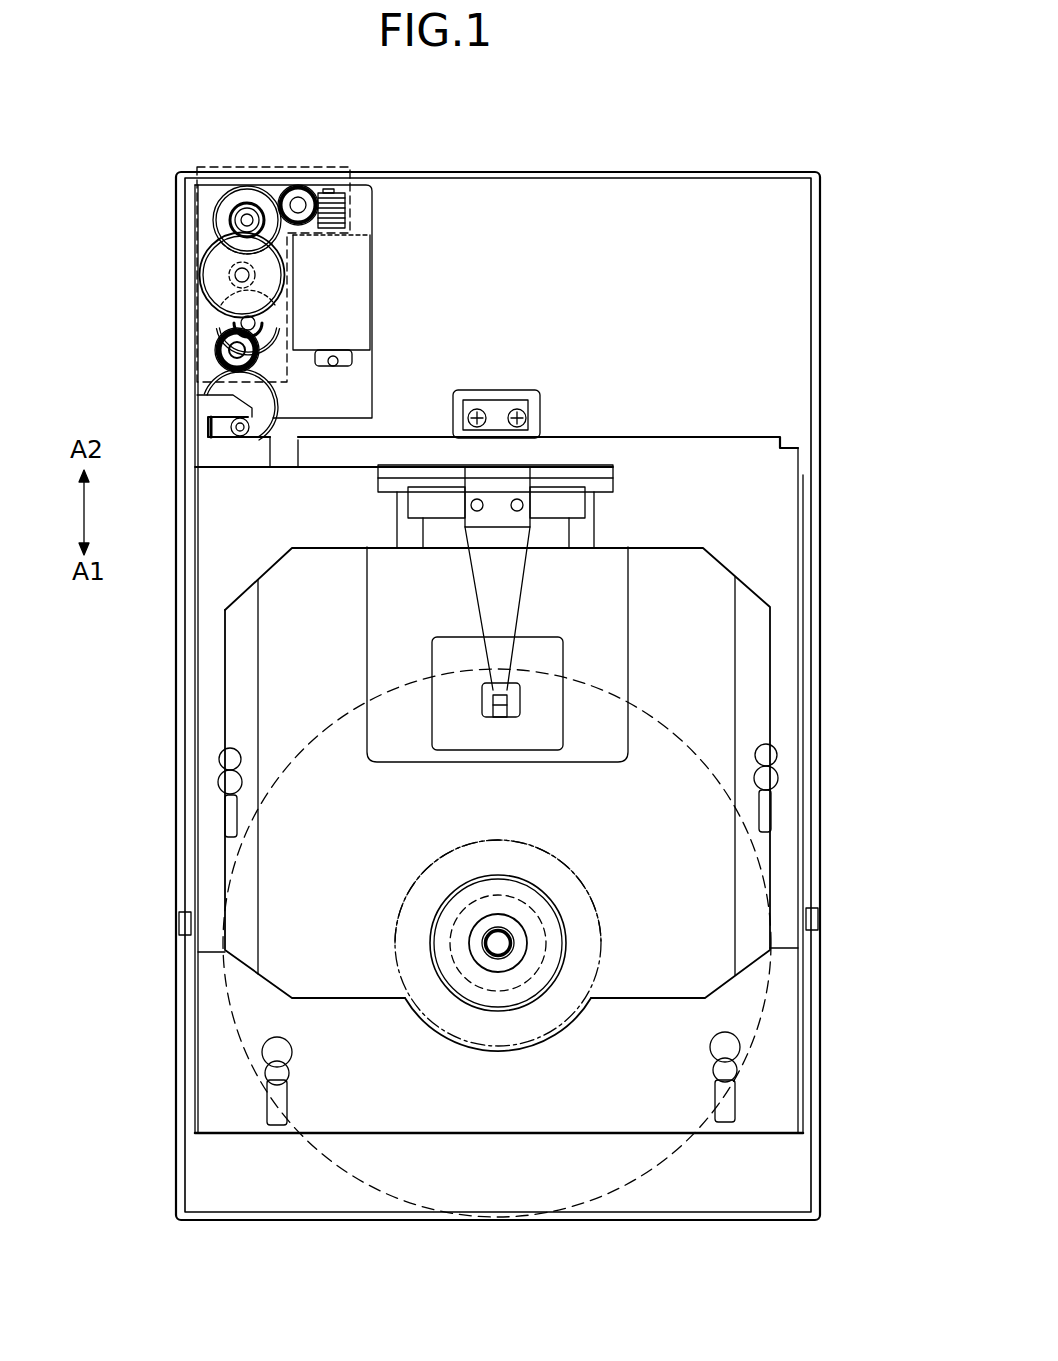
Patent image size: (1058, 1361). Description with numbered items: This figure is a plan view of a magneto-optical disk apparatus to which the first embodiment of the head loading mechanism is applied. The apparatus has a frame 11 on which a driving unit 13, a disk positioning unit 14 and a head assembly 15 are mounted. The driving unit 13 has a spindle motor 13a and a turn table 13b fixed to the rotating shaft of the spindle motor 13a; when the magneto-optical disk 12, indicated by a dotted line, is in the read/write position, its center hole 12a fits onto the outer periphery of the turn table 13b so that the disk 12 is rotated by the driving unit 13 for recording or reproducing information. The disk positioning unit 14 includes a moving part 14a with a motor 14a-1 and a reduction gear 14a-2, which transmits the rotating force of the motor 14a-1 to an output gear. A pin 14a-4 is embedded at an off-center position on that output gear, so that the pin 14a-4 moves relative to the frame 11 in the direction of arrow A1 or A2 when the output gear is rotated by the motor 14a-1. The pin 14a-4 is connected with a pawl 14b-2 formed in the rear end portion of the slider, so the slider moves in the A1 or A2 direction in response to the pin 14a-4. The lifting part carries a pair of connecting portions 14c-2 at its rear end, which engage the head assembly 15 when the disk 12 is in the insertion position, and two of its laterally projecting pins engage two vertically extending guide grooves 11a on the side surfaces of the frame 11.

The frame 11 is at (755, 1182).
The guide grooves 11a is at (179, 924).
The magneto-optical disk 12 is at (353, 1175).
The center hole 12a is at (530, 980).
The driving unit 13 is at (572, 845).
The spindle motor 13a is at (420, 873).
The turn table 13b is at (567, 937).
The disk positioning unit 14 is at (160, 1128).
The moving part 14a is at (388, 217).
The motor 14a-1 is at (357, 306).
The reduction gear 14a-2 is at (312, 167).
The pin 14a-4 is at (236, 444).
The pawl 14b-2 is at (197, 401).
The connecting portions 14c-2 is at (575, 537).
The head assembly 15 is at (553, 402).